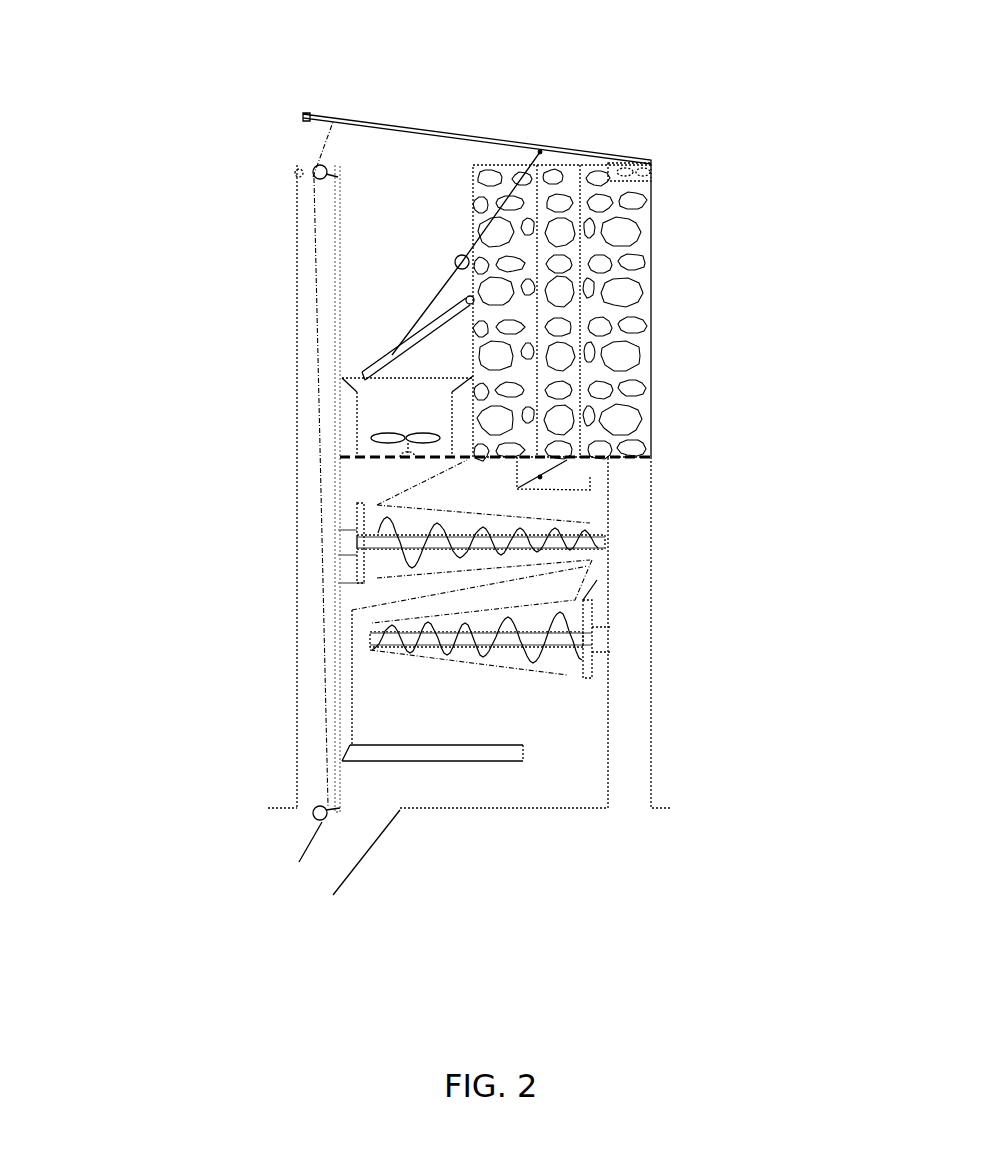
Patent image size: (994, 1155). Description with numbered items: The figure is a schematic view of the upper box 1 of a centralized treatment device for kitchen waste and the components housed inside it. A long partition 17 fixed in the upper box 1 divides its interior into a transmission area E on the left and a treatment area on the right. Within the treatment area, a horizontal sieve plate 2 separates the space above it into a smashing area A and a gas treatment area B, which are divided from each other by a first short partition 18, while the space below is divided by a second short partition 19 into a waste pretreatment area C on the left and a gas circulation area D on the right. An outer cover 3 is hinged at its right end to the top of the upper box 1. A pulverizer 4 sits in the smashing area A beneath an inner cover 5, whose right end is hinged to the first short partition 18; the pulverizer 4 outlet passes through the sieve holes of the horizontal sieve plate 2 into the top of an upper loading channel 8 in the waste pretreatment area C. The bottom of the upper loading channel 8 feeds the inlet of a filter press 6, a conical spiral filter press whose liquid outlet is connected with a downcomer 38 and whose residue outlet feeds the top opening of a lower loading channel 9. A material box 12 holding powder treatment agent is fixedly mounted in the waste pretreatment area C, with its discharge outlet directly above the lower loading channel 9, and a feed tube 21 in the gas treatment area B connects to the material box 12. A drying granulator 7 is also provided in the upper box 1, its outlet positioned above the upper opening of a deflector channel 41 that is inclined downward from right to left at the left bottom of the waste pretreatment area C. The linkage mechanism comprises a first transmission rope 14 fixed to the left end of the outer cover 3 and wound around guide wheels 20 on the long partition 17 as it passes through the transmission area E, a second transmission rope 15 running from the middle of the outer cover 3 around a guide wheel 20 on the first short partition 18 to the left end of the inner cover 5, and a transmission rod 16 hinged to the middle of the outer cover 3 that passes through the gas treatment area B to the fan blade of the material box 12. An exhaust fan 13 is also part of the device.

The upper box 1 is at (770, 813).
The horizontal sieve plate 2 is at (208, 423).
The outer cover 3 is at (483, 165).
The pulverizer 4 is at (208, 380).
The inner cover 5 is at (325, 54).
The filter press 6 is at (207, 680).
The drying granulator 7 is at (207, 745).
The upper loading channel 8 is at (208, 463).
The lower loading channel 9 is at (770, 720).
The material box 12 is at (790, 600).
The exhaust fan 13 is at (790, 54).
The first transmission rope 14 is at (208, 243).
The second transmission rope 15 is at (400, 54).
The transmission rod 16 is at (668, 54).
The long partition 17 is at (208, 190).
The first short partition 18 is at (455, 54).
The second short partition 19 is at (790, 650).
The guide wheel 20 is at (207, 54).
The feed tube 21 is at (790, 292).
The downcomer 38 is at (545, 933).
The deflector channel 41 is at (445, 933).
The smashing area A is at (208, 290).
The gas treatment area B is at (770, 360).
The waste pretreatment area C is at (215, 805).
The gas circulation area D is at (770, 932).
The transmission area E is at (207, 125).